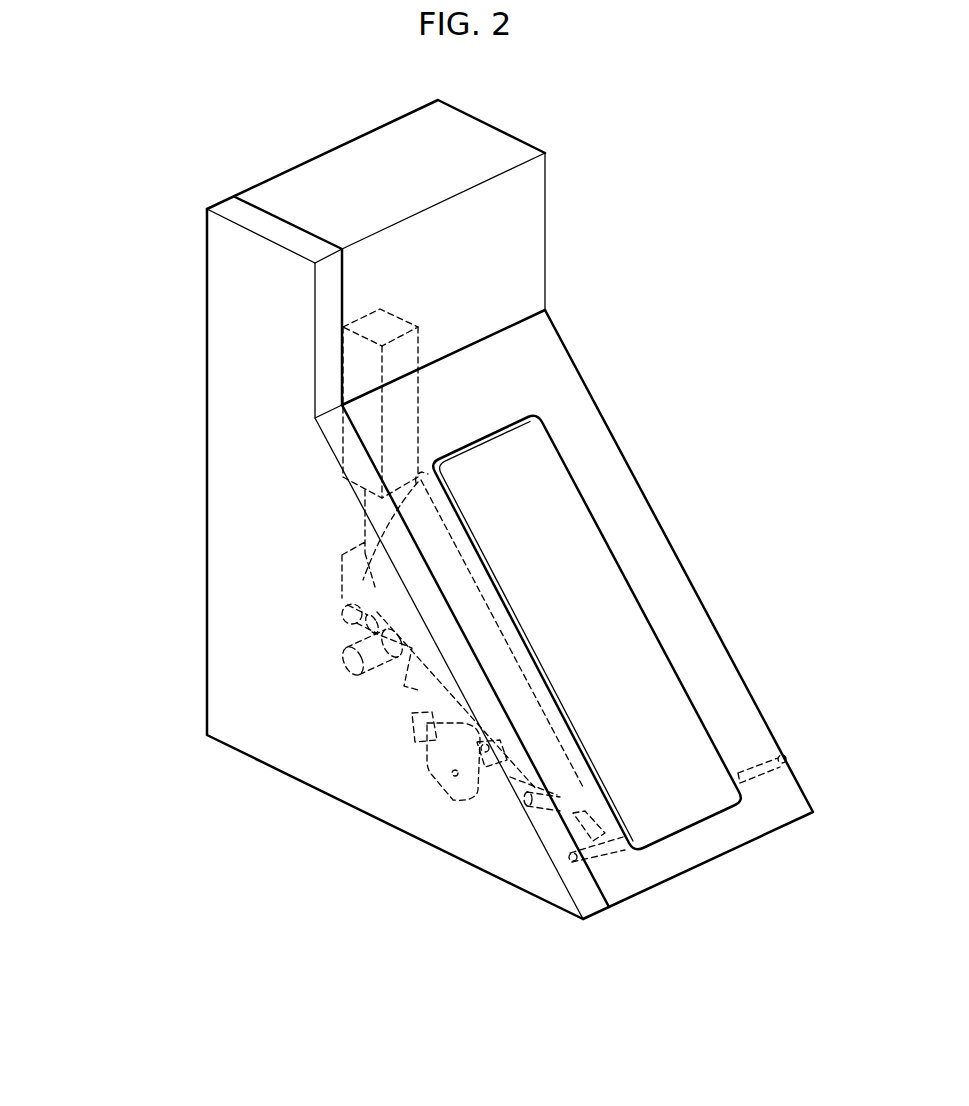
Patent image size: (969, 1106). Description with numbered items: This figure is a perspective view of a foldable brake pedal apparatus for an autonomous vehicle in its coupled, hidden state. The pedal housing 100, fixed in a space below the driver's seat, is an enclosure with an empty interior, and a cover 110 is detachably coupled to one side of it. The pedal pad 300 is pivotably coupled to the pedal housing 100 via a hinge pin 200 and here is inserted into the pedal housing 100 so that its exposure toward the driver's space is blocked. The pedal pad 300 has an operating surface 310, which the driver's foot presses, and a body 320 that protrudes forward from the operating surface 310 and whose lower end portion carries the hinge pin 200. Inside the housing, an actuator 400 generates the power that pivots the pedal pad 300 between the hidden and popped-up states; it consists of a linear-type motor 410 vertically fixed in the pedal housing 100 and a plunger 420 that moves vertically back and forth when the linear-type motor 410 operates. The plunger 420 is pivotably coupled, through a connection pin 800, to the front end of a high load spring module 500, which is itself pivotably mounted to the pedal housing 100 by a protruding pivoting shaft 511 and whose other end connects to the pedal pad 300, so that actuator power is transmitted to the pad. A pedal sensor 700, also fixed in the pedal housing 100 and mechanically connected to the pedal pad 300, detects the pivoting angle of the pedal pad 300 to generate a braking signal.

The pedal housing 100 is at (564, 369).
The cover 110 is at (243, 453).
The hinge pin 200 is at (755, 770).
The pedal pad 300 is at (637, 582).
The operating surface 310 is at (658, 665).
The body 320 is at (493, 660).
The actuator 400 is at (404, 312).
The linear-type motor 410 is at (360, 358).
The plunger 420 is at (348, 578).
The high load spring module 500 is at (422, 690).
The pivoting shaft 511 is at (352, 662).
The pedal sensor 700 is at (443, 777).
The connection pin 800 is at (353, 617).